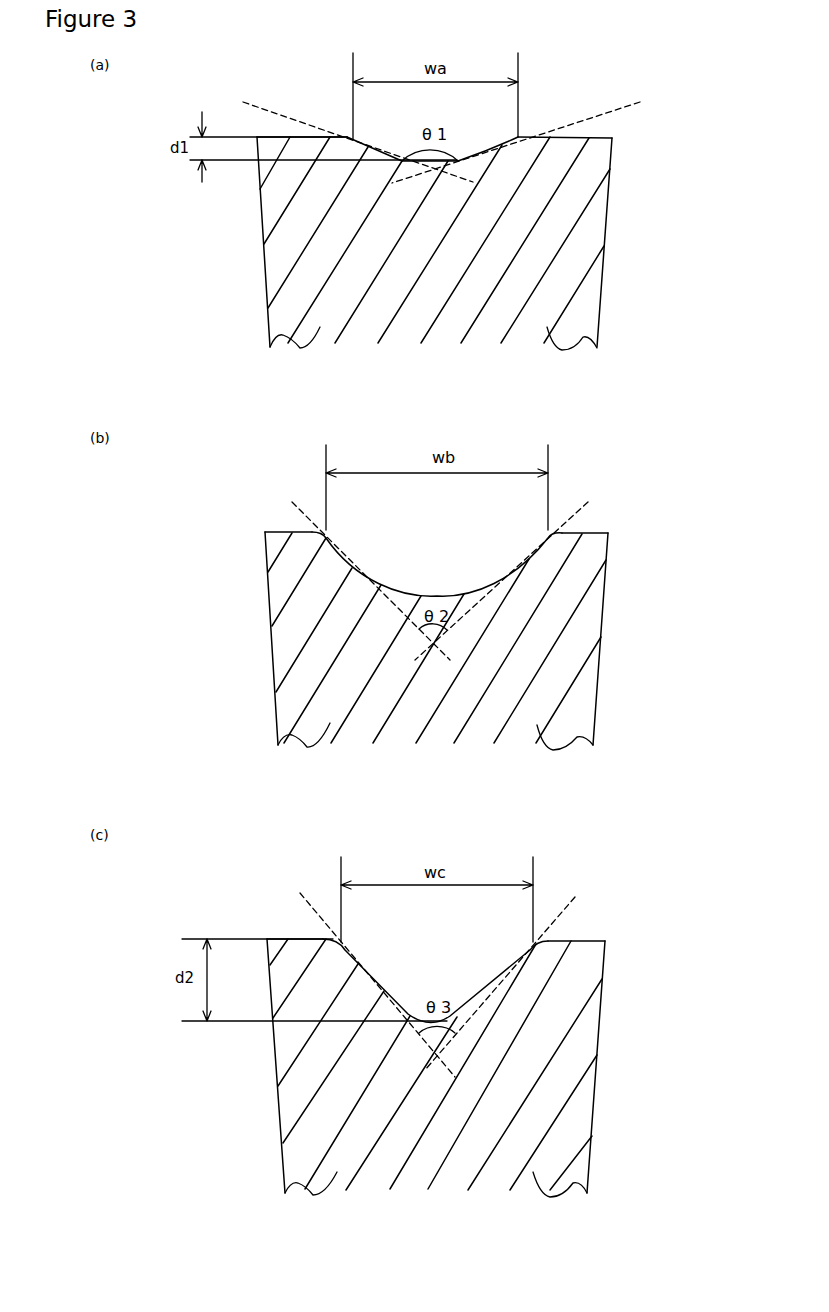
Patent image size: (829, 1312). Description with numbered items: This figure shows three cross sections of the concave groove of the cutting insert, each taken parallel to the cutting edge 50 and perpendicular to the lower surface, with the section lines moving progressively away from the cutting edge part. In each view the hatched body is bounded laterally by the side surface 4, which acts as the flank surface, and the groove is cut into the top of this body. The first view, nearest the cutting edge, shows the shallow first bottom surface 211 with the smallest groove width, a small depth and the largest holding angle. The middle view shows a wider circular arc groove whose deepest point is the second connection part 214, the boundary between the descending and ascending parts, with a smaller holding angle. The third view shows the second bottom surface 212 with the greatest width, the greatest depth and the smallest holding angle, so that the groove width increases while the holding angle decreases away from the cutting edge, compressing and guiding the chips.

The side surface 4 is at (260, 232).
The cutting edge 50 is at (573, 140).
The first bottom surface 211 is at (473, 157).
The second connection part 214 is at (437, 594).
The second bottom surface 212 is at (483, 993).